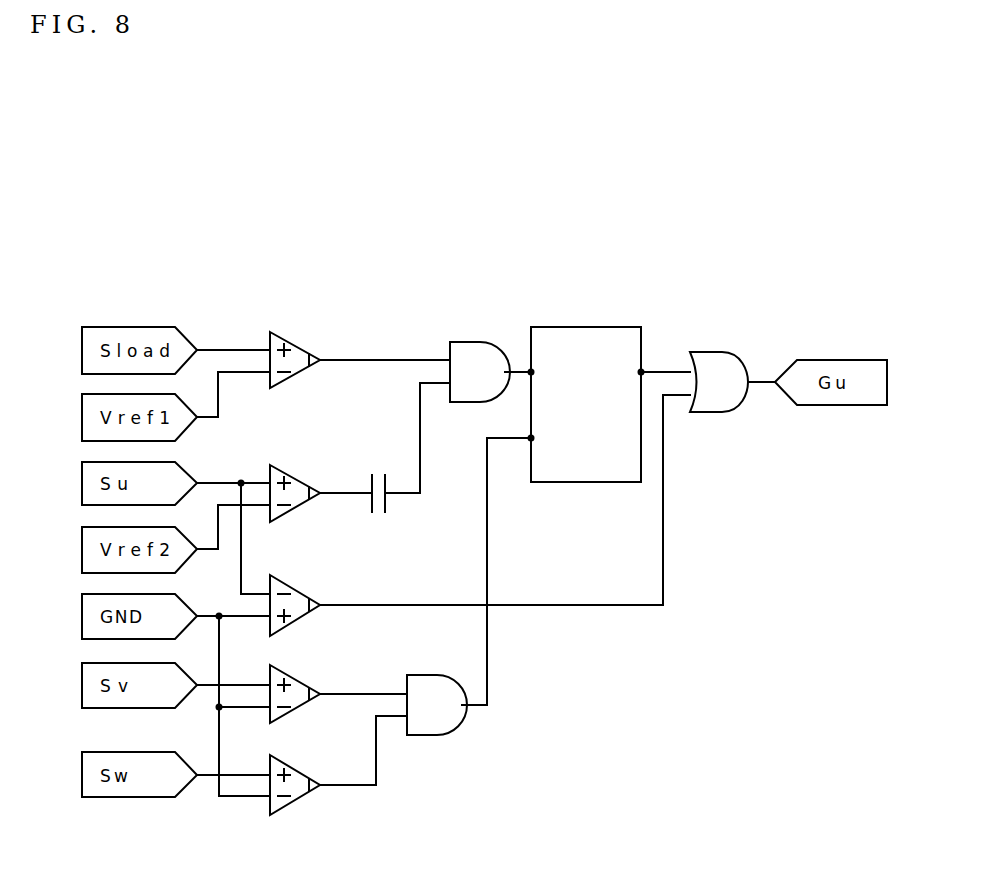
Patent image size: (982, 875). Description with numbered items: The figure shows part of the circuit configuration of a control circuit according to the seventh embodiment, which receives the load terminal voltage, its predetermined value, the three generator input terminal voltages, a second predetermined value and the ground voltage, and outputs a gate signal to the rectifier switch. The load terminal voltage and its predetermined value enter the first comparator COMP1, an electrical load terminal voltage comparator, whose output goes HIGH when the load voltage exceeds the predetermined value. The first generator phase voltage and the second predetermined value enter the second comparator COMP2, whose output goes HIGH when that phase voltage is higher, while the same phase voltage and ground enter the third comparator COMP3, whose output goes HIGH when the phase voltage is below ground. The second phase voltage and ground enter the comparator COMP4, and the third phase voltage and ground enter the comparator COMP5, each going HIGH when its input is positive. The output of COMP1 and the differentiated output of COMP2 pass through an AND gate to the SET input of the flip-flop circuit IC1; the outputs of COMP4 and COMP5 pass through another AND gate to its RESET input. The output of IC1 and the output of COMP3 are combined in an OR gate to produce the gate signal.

The first comparator COMP1 is at (278, 335).
The second comparator COMP2 is at (277, 468).
The third comparator COMP3 is at (278, 582).
The comparator COMP4 is at (279, 673).
The another comparator COMP5 is at (281, 808).
The flip-flop circuit IC1 is at (553, 337).